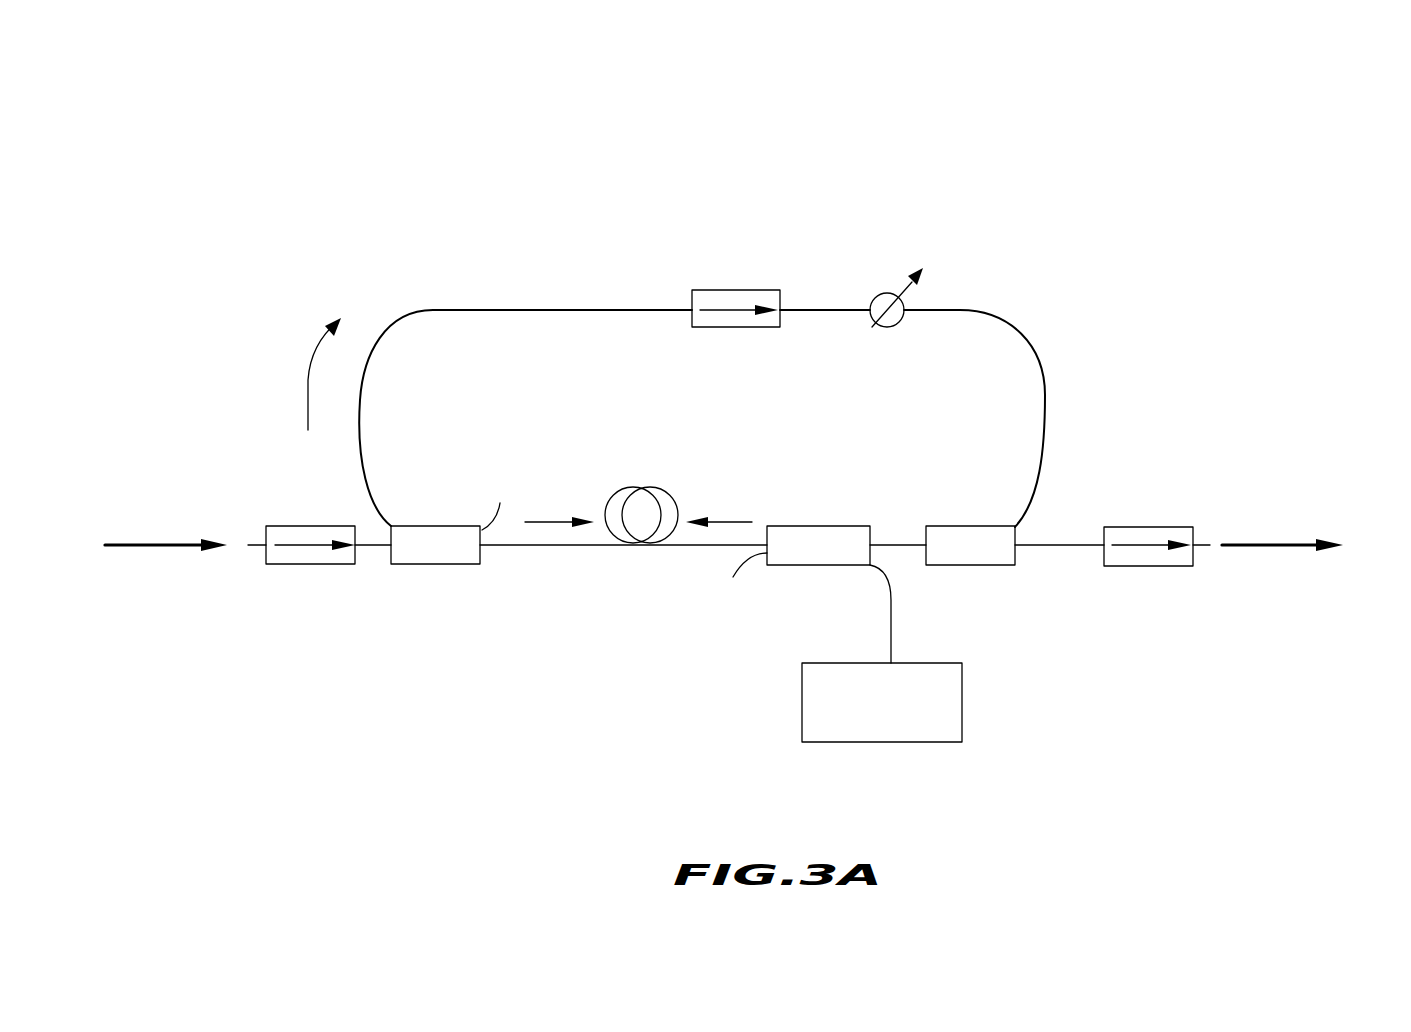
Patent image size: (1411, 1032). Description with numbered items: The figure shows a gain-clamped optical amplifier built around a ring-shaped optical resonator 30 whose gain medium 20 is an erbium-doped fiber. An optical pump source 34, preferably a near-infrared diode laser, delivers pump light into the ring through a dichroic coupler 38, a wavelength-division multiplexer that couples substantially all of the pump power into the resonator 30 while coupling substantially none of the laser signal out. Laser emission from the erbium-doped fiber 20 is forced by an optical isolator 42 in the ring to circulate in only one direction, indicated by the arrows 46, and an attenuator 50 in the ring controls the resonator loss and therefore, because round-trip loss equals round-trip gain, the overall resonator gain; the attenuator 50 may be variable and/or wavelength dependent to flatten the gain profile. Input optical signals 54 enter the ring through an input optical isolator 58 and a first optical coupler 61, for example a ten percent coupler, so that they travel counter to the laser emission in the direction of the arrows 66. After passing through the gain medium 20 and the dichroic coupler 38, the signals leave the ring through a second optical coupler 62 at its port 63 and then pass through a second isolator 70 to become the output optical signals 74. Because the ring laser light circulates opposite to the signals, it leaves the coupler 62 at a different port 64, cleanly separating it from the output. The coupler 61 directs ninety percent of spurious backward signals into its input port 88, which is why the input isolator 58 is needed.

The optical resonator 30 is at (510, 205).
The gain medium 20 is at (623, 532).
The optical pump source 34 is at (962, 698).
The dichroic coupler 38 is at (802, 526).
The optical isolator 42 is at (692, 300).
The arrows 46 is at (307, 375).
The attenuator 50 is at (905, 305).
The input optical signals 54 is at (150, 543).
The optical isolator 58 is at (313, 564).
The optical coupler 61 is at (430, 526).
The optical coupler 62 is at (960, 527).
The port 63 is at (1040, 543).
The port 64 is at (926, 527).
The arrows 66 is at (300, 544).
The second isolator 70 is at (1168, 566).
The output optical signals 74 is at (1290, 545).
The input port 88 is at (383, 543).